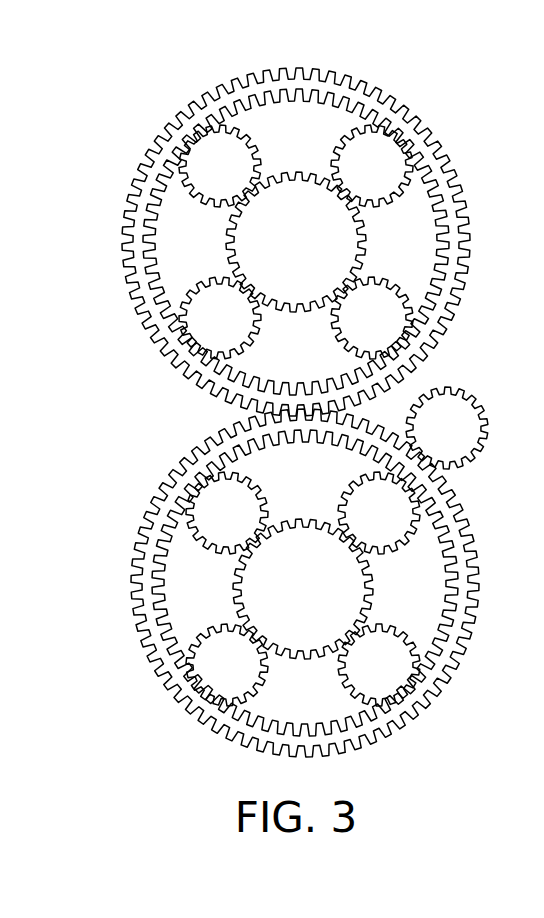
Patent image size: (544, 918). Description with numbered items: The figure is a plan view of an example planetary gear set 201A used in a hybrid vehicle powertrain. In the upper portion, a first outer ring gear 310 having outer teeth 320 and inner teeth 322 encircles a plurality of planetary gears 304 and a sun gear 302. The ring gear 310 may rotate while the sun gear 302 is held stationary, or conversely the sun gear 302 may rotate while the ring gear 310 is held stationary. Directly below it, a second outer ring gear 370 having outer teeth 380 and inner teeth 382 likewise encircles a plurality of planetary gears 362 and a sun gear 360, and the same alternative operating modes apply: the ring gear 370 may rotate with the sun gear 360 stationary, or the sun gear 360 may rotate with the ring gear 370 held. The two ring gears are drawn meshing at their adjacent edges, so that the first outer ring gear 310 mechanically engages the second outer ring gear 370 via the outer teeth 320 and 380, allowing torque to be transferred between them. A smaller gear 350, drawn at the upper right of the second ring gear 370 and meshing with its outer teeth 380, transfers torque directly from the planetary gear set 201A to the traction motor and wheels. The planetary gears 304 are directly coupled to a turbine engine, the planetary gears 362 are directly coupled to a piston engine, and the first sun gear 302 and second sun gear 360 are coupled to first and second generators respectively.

The planetary gear set 201A is at (126, 46).
The sun gear 302 is at (279, 254).
The planetary gears 304 is at (201, 177).
The first outer ring gear 310 is at (195, 122).
The outer teeth 320 is at (130, 195).
The inner teeth 322 is at (155, 206).
The gear 350 is at (429, 437).
The sun gear 360 is at (286, 598).
The planetary gears 362 is at (211, 523).
The second outer ring gear 370 is at (152, 513).
The outer teeth 380 is at (131, 590).
The inner teeth 382 is at (157, 568).